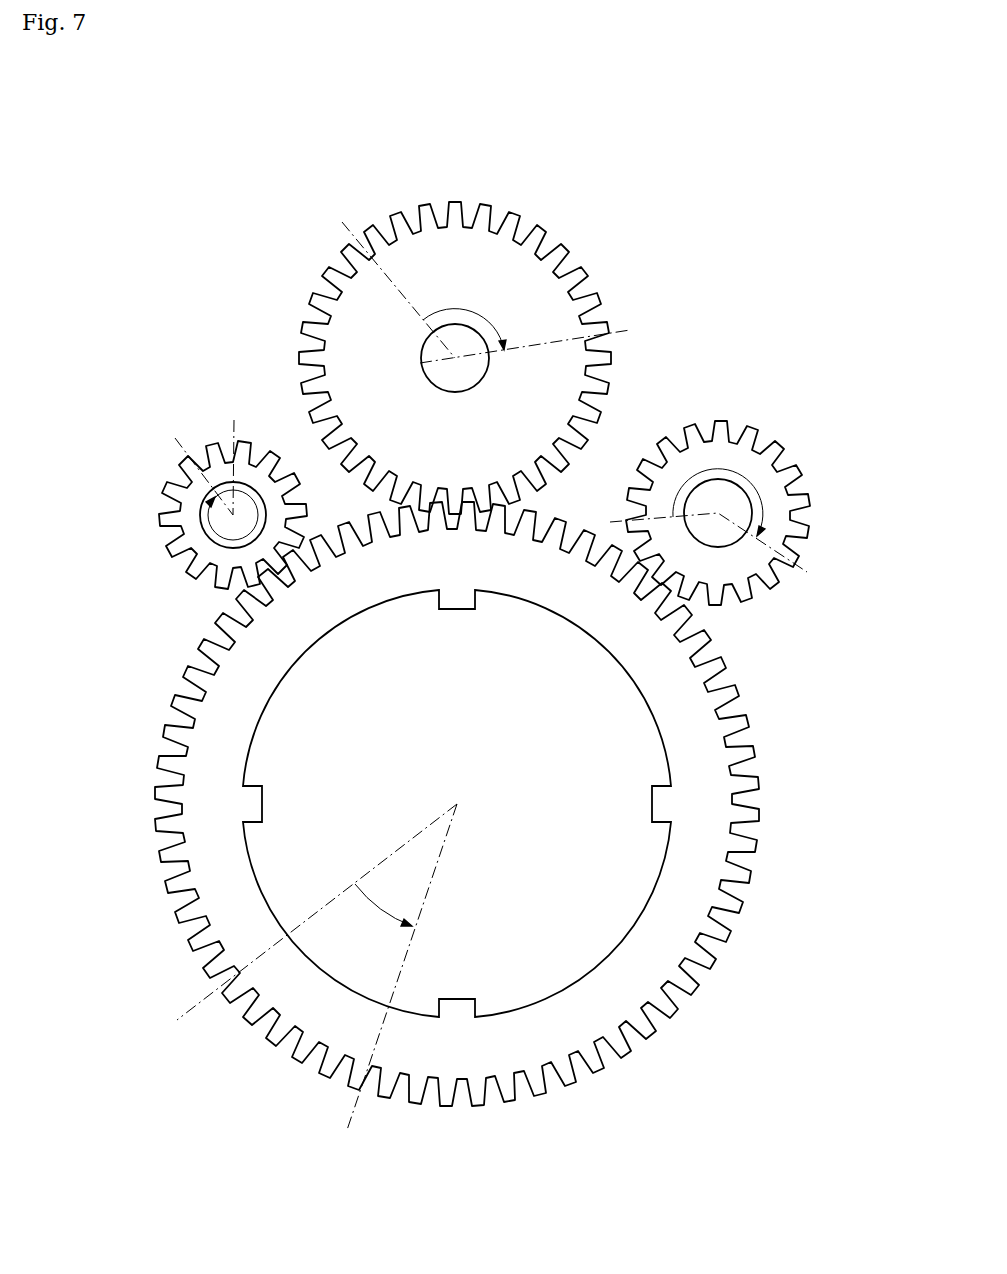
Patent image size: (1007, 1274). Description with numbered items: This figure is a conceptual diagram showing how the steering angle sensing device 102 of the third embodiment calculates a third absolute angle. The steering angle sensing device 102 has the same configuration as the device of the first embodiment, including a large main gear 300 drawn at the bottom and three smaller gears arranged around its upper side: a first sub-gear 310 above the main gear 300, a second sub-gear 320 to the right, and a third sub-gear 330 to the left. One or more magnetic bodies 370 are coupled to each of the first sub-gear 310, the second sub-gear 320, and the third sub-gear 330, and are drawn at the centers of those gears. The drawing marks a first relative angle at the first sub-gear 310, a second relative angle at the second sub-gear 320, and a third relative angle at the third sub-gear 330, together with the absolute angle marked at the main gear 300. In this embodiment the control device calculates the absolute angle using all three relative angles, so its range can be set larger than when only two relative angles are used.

The steering angle sensing device 102 is at (258, 200).
The main gear 300 is at (654, 1043).
The first sub-gear 310 is at (545, 220).
The second sub-gear 320 is at (724, 412).
The third sub-gear 330 is at (156, 512).
The magnetic body 370 is at (420, 367).